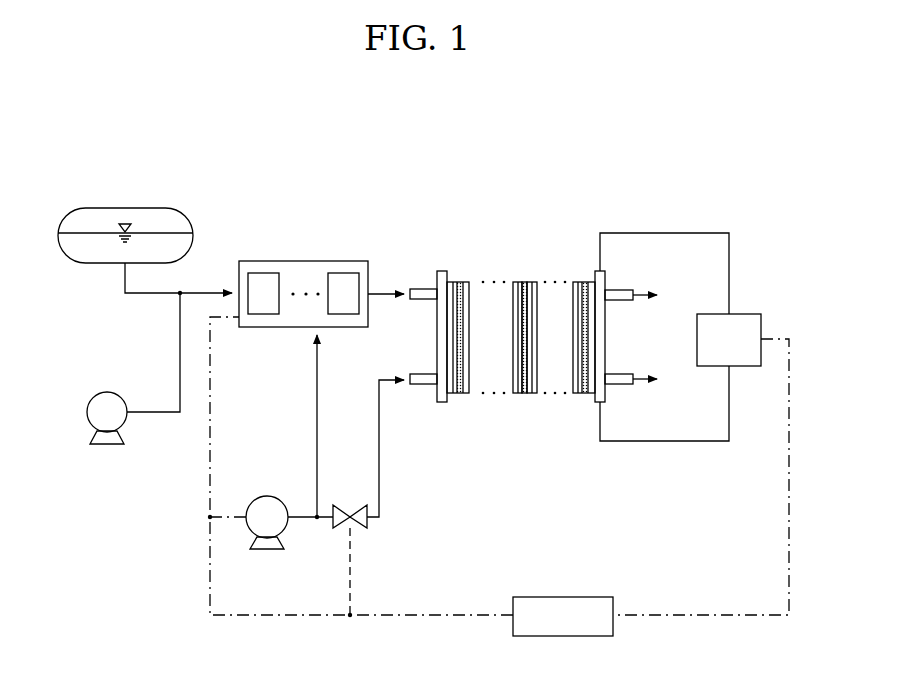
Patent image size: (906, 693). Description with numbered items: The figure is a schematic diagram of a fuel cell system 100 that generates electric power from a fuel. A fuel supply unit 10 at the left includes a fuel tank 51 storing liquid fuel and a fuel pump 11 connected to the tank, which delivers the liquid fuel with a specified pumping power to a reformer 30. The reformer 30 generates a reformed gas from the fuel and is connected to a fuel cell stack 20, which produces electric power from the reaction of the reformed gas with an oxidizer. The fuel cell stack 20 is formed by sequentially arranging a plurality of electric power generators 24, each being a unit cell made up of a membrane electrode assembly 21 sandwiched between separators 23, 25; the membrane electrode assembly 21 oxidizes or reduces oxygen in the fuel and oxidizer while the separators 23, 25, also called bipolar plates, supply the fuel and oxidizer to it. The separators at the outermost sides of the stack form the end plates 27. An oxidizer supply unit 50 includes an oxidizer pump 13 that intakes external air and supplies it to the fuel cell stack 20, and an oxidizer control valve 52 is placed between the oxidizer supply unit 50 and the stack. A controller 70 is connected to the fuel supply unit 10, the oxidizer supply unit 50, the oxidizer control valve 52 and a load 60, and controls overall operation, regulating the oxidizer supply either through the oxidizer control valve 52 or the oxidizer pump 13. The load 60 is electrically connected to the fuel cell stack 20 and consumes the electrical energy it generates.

The fuel cell system 100 is at (594, 174).
The fuel supply unit 10 is at (75, 189).
The fuel tank 51 is at (128, 208).
The fuel pump 11 is at (121, 396).
The reformer 30 is at (339, 261).
The fuel cell stack 20 is at (555, 258).
The end plate 27 is at (437, 337).
The electric power generator 24 is at (480, 461).
The separator 23 is at (517, 393).
The membrane electrode assembly 21 is at (524, 393).
The separator 25 is at (531, 393).
The load 60 is at (748, 314).
The controller 70 is at (565, 636).
The oxidizer supply unit 50 is at (259, 494).
The oxidizer pump 13 is at (273, 497).
The oxidizer control valve 52 is at (369, 527).